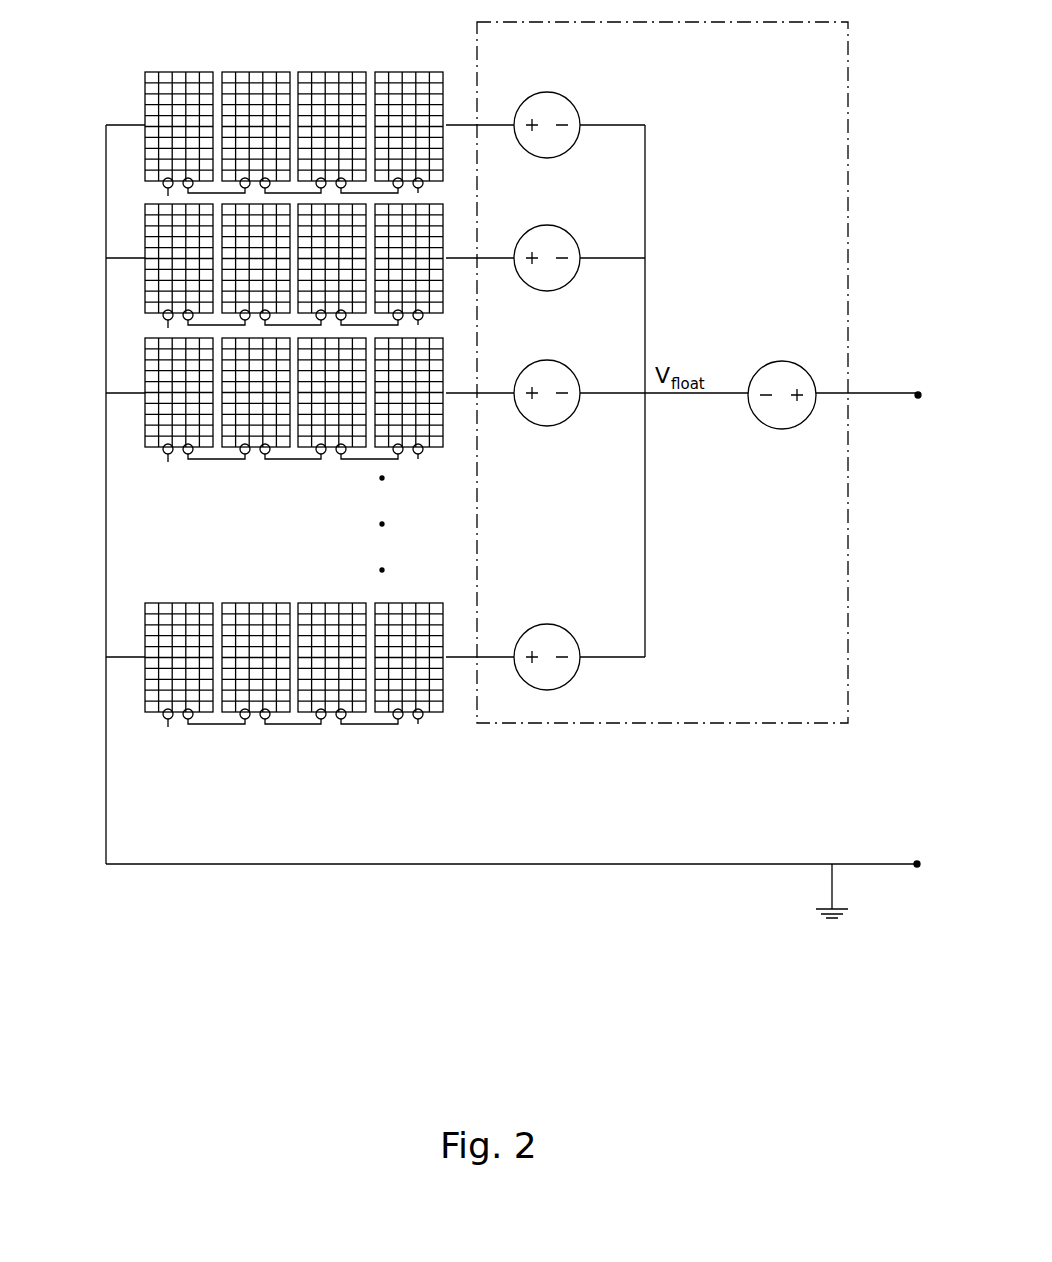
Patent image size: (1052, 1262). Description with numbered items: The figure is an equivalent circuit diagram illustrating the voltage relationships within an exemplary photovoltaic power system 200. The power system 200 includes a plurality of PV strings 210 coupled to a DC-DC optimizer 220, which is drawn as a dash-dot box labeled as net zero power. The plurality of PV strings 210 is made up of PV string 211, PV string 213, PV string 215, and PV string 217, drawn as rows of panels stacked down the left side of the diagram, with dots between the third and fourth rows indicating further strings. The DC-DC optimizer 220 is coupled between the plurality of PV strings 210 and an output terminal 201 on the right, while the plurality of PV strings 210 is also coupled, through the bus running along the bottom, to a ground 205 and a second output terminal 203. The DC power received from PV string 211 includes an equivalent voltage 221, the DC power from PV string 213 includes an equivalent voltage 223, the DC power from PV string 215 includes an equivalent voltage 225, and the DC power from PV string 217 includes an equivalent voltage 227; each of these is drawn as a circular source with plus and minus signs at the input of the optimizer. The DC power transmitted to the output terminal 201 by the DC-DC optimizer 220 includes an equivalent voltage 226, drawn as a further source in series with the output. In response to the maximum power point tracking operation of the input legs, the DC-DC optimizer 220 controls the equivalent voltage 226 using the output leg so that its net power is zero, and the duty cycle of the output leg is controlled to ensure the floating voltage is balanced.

The power system 200 is at (424, 889).
The output terminal 201 is at (918, 392).
The second output terminal 203 is at (917, 861).
The ground 205 is at (850, 909).
The plurality of PV strings 210 is at (74, 756).
The PV string 211 is at (145, 88).
The PV string 213 is at (145, 218).
The PV string 215 is at (145, 352).
The PV string 217 is at (145, 618).
The DC-DC optimizer 220 is at (572, 725).
The equivalent voltage 221 is at (570, 100).
The equivalent voltage 223 is at (570, 234).
The equivalent voltage 225 is at (570, 369).
The equivalent voltage 226 is at (806, 370).
The equivalent voltage 227 is at (570, 633).